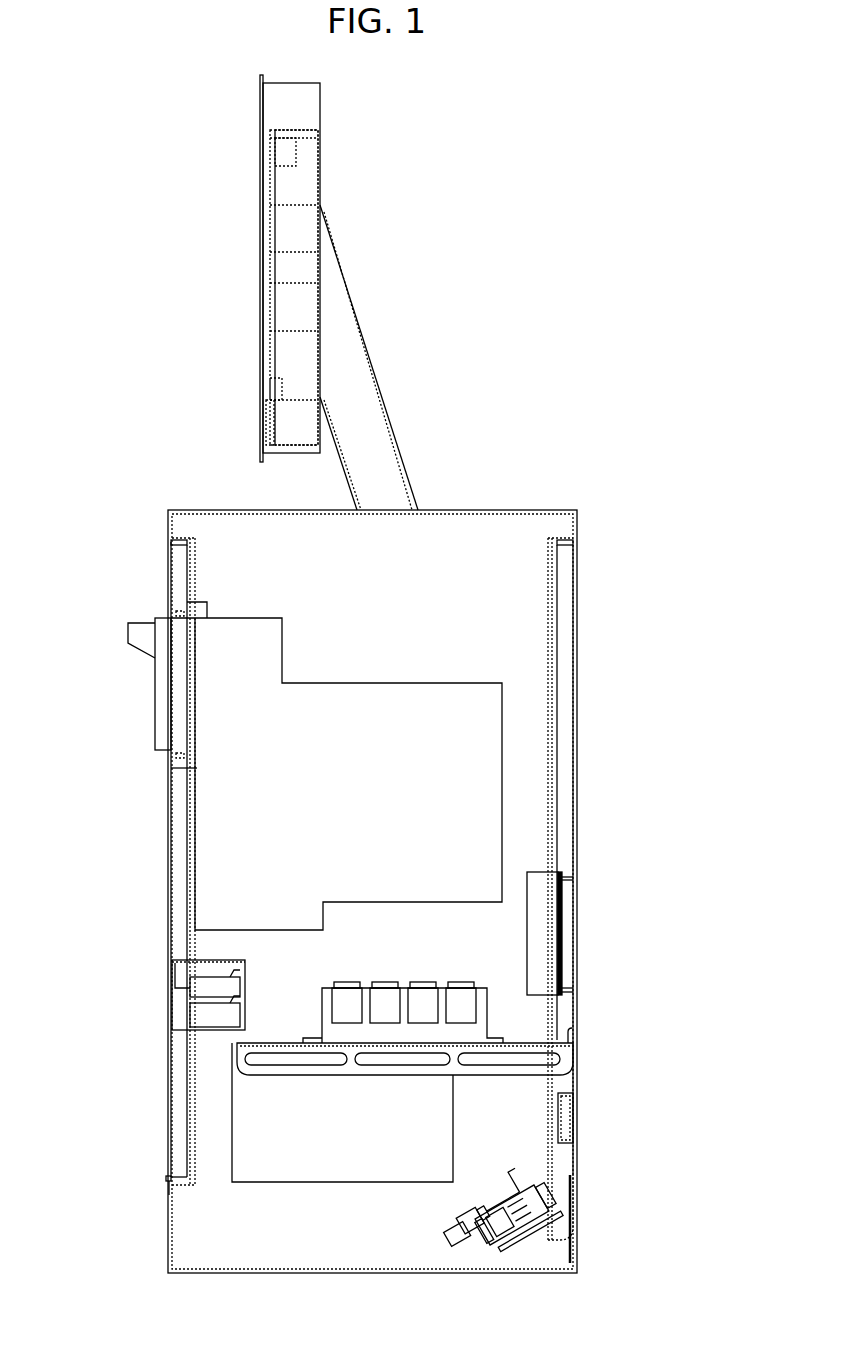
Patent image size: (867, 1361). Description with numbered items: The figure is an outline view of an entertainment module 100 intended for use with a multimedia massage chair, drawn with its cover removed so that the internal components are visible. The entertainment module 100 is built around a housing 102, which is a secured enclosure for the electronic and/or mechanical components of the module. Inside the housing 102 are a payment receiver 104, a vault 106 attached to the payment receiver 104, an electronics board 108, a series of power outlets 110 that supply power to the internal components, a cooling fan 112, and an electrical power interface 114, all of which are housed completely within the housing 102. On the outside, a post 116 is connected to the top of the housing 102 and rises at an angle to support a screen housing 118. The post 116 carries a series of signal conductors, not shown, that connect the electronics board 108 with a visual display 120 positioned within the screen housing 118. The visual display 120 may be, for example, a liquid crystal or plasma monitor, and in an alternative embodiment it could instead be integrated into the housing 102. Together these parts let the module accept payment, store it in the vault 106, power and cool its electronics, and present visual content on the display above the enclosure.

The entertainment module 100 is at (640, 393).
The housing 102 is at (520, 518).
The payment receiver 104 is at (156, 697).
The vault 106 is at (253, 832).
The electronics board 108 is at (311, 1153).
The series of power outlets 110 is at (460, 1008).
The cooling fan 112 is at (535, 938).
The electrical power interface 114 is at (530, 1197).
The post 116 is at (360, 395).
The screen housing 118 is at (292, 105).
The visual display 120 is at (288, 275).